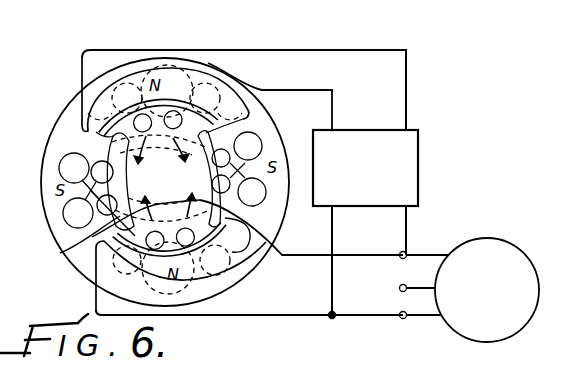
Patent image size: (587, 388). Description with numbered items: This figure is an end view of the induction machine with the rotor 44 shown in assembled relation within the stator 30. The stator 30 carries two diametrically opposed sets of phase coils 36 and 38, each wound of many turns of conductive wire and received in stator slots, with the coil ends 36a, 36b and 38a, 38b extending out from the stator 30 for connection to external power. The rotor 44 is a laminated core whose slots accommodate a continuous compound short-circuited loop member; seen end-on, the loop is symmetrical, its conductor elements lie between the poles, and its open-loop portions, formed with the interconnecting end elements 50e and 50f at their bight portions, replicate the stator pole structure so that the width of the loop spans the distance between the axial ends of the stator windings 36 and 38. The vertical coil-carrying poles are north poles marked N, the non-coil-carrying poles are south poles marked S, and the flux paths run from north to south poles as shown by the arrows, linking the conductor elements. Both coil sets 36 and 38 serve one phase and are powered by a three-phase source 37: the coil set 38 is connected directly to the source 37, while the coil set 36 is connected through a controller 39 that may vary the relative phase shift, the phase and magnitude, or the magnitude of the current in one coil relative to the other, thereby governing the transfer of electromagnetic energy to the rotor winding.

The stator 30 is at (72, 102).
The stator phase coil 36 is at (218, 79).
The coil end 36a is at (272, 92).
The coil end 36b is at (244, 90).
The three-phase source 37 is at (479, 216).
The stator phase coil 38 is at (102, 287).
The coil end 38a is at (233, 300).
The coil end 38b is at (306, 258).
The controller 39 is at (372, 178).
The rotor core 44 is at (173, 189).
The end element 50e is at (72, 249).
The end element 50f is at (275, 229).